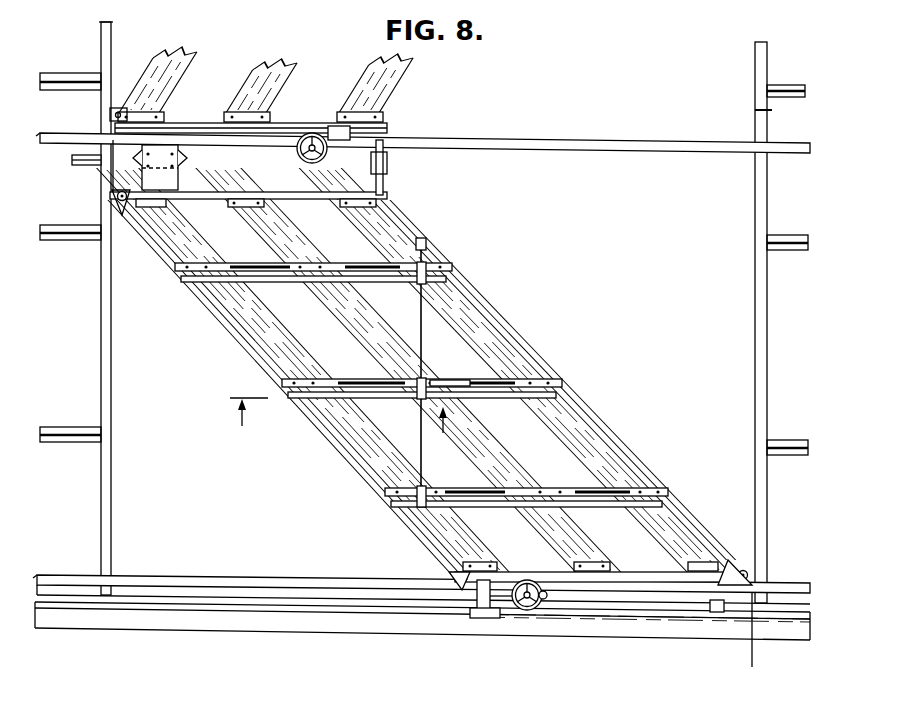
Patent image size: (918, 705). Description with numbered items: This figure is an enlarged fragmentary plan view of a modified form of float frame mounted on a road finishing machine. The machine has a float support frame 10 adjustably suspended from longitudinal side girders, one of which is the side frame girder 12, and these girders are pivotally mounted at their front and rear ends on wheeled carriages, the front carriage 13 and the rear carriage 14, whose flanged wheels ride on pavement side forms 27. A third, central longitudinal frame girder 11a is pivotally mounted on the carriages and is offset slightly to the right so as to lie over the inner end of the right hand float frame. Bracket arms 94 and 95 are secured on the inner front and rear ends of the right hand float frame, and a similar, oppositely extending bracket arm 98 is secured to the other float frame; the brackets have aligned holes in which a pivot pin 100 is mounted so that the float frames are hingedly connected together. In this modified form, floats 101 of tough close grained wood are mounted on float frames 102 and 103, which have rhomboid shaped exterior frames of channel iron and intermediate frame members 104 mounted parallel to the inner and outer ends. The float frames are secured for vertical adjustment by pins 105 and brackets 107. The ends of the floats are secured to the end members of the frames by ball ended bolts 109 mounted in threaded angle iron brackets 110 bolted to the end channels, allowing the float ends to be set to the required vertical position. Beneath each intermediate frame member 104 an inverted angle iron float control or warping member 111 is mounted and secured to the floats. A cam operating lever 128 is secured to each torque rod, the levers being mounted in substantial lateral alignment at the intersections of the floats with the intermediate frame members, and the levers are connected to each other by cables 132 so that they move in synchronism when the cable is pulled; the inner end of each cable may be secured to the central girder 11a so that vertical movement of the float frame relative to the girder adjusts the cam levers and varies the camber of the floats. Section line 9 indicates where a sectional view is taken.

The section line 9 is at (757, 662).
The float support frame 10 is at (343, 427).
The central longitudinal frame girder 11a is at (596, 140).
The side frame girder 12 is at (170, 580).
The front carriage 13 is at (76, 308).
The rear carriage 14 is at (781, 322).
The pavement side form 27 is at (280, 612).
The bracket arm 94 is at (338, 126).
The bracket arm 95 is at (109, 140).
The bracket arm 98 is at (383, 184).
The pivot pin 100 is at (385, 160).
The float 101 is at (272, 338).
The float frame 102 is at (366, 491).
The float frame 103 is at (420, 97).
The intermediate frame member 104 is at (512, 395).
The pin 105 is at (120, 218).
The bracket 107 is at (118, 200).
The ball ended bolt 109 is at (240, 209).
The threaded angle iron bracket 110 is at (264, 204).
The float control or warping member 111 is at (449, 386).
The cam operating lever 128 is at (428, 265).
The cable 132 is at (423, 326).